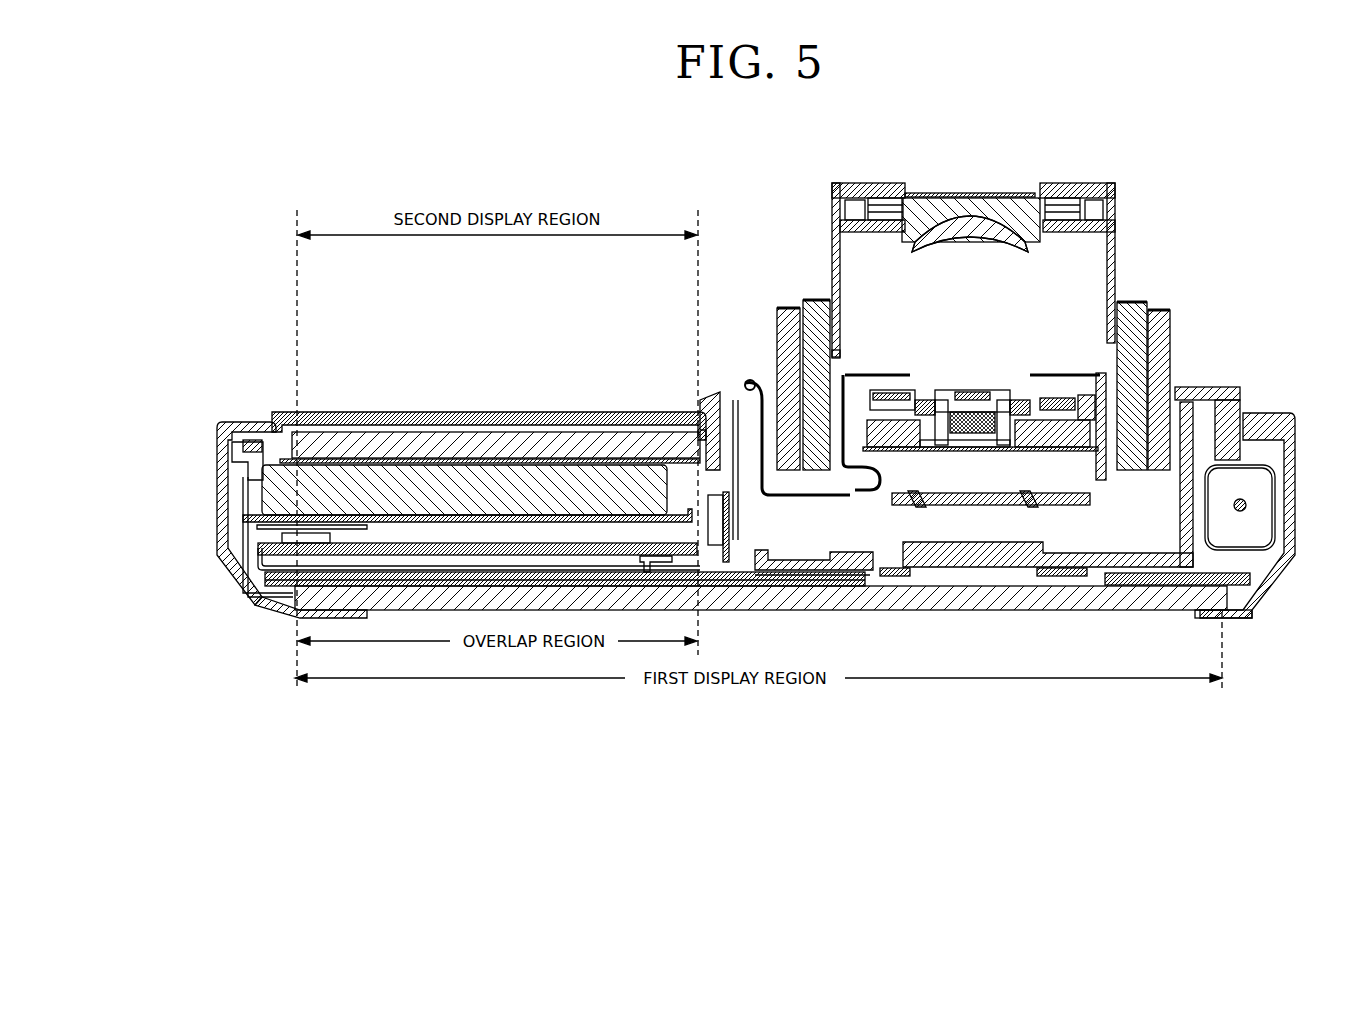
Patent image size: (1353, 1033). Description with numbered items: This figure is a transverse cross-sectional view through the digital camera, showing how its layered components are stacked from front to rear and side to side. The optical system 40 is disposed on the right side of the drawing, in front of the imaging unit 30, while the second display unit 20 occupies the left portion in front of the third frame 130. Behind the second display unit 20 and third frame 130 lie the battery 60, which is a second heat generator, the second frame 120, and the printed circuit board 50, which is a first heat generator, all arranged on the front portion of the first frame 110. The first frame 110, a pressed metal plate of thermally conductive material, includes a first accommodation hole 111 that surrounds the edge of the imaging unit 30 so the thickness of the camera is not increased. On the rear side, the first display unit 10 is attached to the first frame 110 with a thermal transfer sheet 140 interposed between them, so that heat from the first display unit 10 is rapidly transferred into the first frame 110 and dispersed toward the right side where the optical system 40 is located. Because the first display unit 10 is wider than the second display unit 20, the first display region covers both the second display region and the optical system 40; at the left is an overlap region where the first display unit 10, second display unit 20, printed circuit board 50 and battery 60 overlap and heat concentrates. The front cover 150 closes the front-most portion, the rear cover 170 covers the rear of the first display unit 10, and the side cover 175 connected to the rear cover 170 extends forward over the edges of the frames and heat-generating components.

The first display unit 10 is at (922, 620).
The second display unit 20 is at (483, 418).
The imaging unit 30 is at (991, 590).
The optical system 40 is at (1124, 280).
The printed circuit board 50 is at (432, 546).
The battery 60 is at (612, 478).
The first frame 110 is at (440, 578).
The first accommodation hole 111 is at (855, 580).
The second frame 120 is at (532, 533).
The third frame 130 is at (384, 447).
The thermal transfer sheet 140 is at (412, 571).
The front cover 150 is at (246, 412).
The rear cover 170 is at (277, 632).
The side cover 175 is at (206, 483).